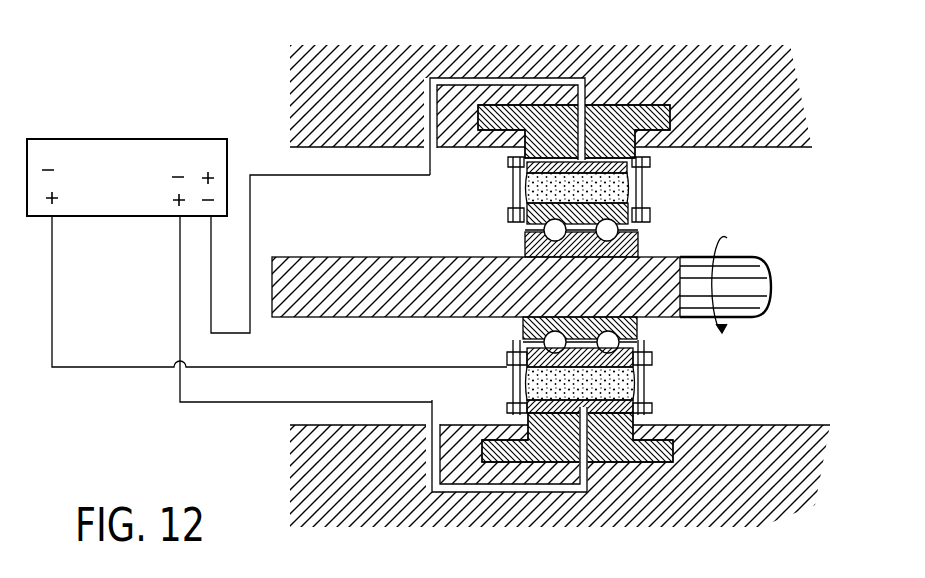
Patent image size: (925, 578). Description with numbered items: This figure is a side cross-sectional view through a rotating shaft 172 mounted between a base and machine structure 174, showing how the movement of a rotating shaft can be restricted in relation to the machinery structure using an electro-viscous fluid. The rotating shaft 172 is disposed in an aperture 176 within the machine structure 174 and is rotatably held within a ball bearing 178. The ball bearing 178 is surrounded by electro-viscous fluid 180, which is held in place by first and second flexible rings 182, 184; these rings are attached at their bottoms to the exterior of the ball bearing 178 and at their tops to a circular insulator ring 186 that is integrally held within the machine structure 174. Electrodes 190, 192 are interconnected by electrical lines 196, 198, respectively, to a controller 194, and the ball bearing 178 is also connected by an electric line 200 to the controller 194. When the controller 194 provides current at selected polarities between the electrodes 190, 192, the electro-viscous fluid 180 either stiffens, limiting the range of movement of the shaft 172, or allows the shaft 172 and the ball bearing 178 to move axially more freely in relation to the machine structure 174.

The rotating shaft 172 is at (766, 278).
The machine structure 174 is at (783, 92).
The aperture 176 is at (800, 352).
The ball bearing 178 is at (640, 237).
The electro-viscous fluid 180 is at (520, 198).
The first flexible ring 182 is at (522, 183).
The second flexible ring 184 is at (645, 190).
The circular insulator ring 186 is at (640, 407).
The electrode 190 is at (575, 158).
The electrode 192 is at (615, 465).
The controller 194 is at (157, 139).
The electrical line 196 is at (377, 176).
The electrical line 198 is at (248, 405).
The electric line 200 is at (322, 365).